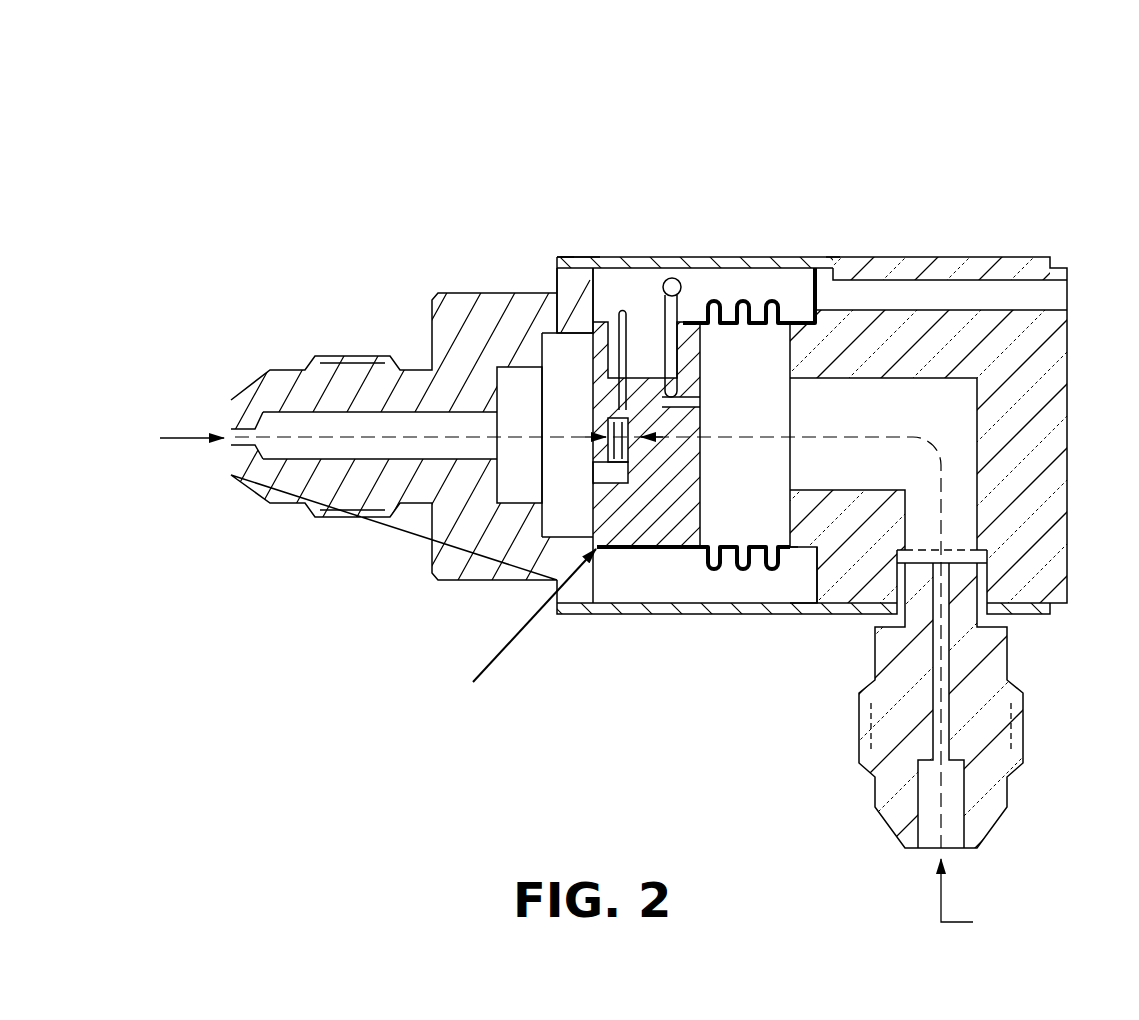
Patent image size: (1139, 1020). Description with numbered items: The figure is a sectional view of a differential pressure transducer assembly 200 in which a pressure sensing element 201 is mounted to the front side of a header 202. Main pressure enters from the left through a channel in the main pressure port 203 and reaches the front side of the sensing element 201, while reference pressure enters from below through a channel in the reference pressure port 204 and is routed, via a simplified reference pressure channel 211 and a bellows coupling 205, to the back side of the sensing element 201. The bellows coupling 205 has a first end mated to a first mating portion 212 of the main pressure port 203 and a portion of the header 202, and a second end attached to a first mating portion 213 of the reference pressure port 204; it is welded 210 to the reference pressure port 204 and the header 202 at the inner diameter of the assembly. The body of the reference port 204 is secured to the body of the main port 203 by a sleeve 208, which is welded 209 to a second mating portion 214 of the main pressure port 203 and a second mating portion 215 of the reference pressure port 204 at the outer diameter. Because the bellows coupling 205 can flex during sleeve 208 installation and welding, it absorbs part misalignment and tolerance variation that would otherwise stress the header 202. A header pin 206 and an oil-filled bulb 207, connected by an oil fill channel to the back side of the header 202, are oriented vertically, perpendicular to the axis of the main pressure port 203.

The differential pressure transducer assembly 200 is at (627, 80).
The pressure sensing element 201 is at (593, 540).
The header 202 is at (647, 568).
The main pressure port 203 is at (450, 398).
The reference pressure port 204 is at (991, 711).
The bellows coupling 205 is at (745, 296).
The header pin 206 is at (621, 321).
The oil-filled bulb 207 is at (667, 295).
The sleeve 208 is at (613, 613).
The weld 209 is at (870, 180).
The weld 210 is at (695, 553).
The reference pressure channel 211 is at (952, 423).
The first mating portion of the main pressure port 212 is at (588, 297).
The first mating portion of the reference pressure port 213 is at (819, 572).
The second mating portion of the main pressure port 214 is at (553, 275).
The second mating portion of the reference pressure port 215 is at (836, 275).